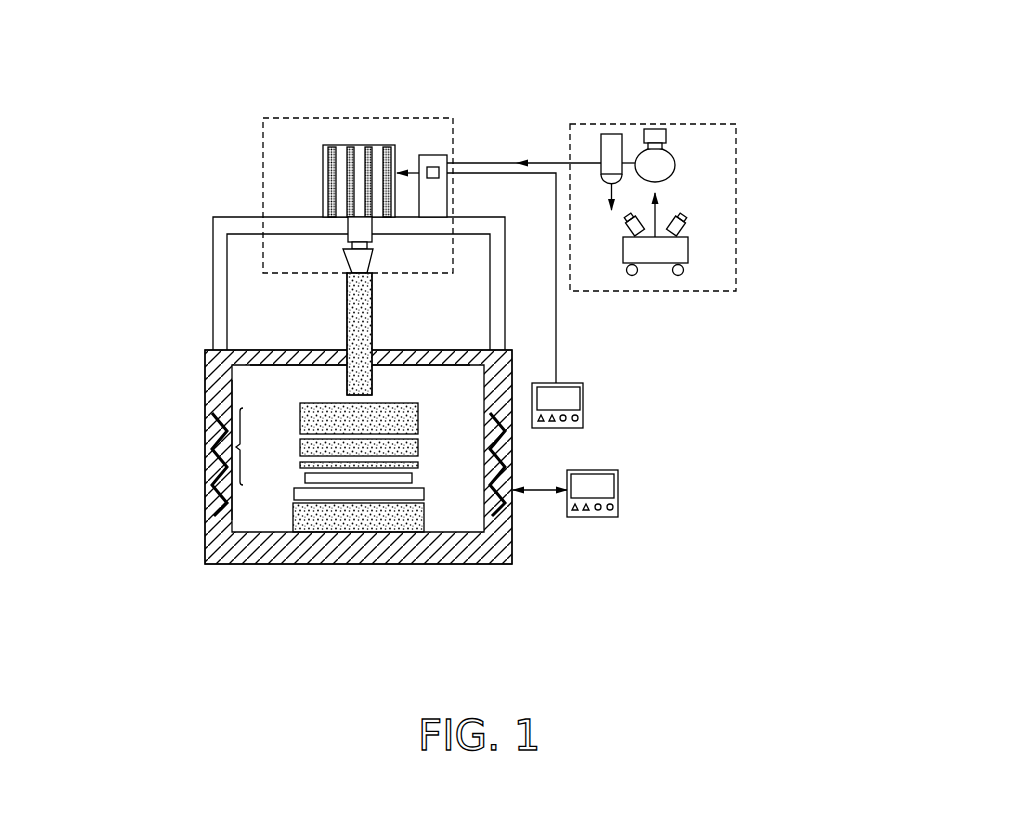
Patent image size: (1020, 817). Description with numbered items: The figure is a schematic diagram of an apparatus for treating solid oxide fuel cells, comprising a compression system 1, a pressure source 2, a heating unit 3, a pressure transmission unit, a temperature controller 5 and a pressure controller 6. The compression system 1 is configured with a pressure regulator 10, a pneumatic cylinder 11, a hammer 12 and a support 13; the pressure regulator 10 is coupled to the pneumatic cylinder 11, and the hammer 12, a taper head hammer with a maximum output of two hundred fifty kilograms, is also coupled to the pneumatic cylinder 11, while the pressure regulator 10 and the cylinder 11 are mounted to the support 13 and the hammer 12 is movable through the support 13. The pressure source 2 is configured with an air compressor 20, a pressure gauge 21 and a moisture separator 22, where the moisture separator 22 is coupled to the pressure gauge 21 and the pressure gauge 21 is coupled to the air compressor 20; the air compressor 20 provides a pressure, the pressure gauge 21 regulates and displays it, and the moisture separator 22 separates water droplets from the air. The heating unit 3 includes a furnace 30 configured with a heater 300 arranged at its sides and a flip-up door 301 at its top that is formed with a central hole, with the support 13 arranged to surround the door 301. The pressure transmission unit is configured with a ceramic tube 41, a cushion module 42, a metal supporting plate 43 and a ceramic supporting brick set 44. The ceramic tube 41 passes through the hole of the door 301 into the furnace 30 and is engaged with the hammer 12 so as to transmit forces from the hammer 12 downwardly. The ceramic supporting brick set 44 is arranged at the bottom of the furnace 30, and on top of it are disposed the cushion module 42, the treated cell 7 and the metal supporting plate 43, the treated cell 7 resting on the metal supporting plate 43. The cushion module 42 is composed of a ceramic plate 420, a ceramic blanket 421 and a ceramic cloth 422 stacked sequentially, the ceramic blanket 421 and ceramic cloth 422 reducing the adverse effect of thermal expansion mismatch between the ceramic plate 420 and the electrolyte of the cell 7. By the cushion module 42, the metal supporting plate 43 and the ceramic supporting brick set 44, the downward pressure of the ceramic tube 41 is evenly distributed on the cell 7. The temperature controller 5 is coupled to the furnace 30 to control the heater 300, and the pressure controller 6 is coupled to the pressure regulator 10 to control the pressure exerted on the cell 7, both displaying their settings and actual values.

The compression system 1 is at (450, 88).
The pressure source 2 is at (727, 110).
The heating unit 3 is at (135, 472).
The temperature controller 5 is at (607, 488).
The pressure controller 6 is at (580, 398).
The treated cell 7 is at (412, 478).
The pressure regulator 10 is at (438, 195).
The pneumatic cylinder 11 is at (328, 173).
The hammer 12 is at (351, 258).
The support 13 is at (218, 230).
The air compressor 20 is at (673, 247).
The pressure gauge 21 is at (653, 133).
The moisture separator 22 is at (613, 134).
The furnace 30 is at (335, 552).
The ceramic tube 41 is at (374, 313).
The cushion module 42 is at (236, 447).
The metal supporting plate 43 is at (418, 496).
The ceramic supporting brick set 44 is at (407, 518).
The heater 300 is at (222, 513).
The door 301 is at (417, 365).
The ceramic plate 420 is at (308, 422).
The ceramic blanket 421 is at (303, 449).
The ceramic cloth 422 is at (302, 464).